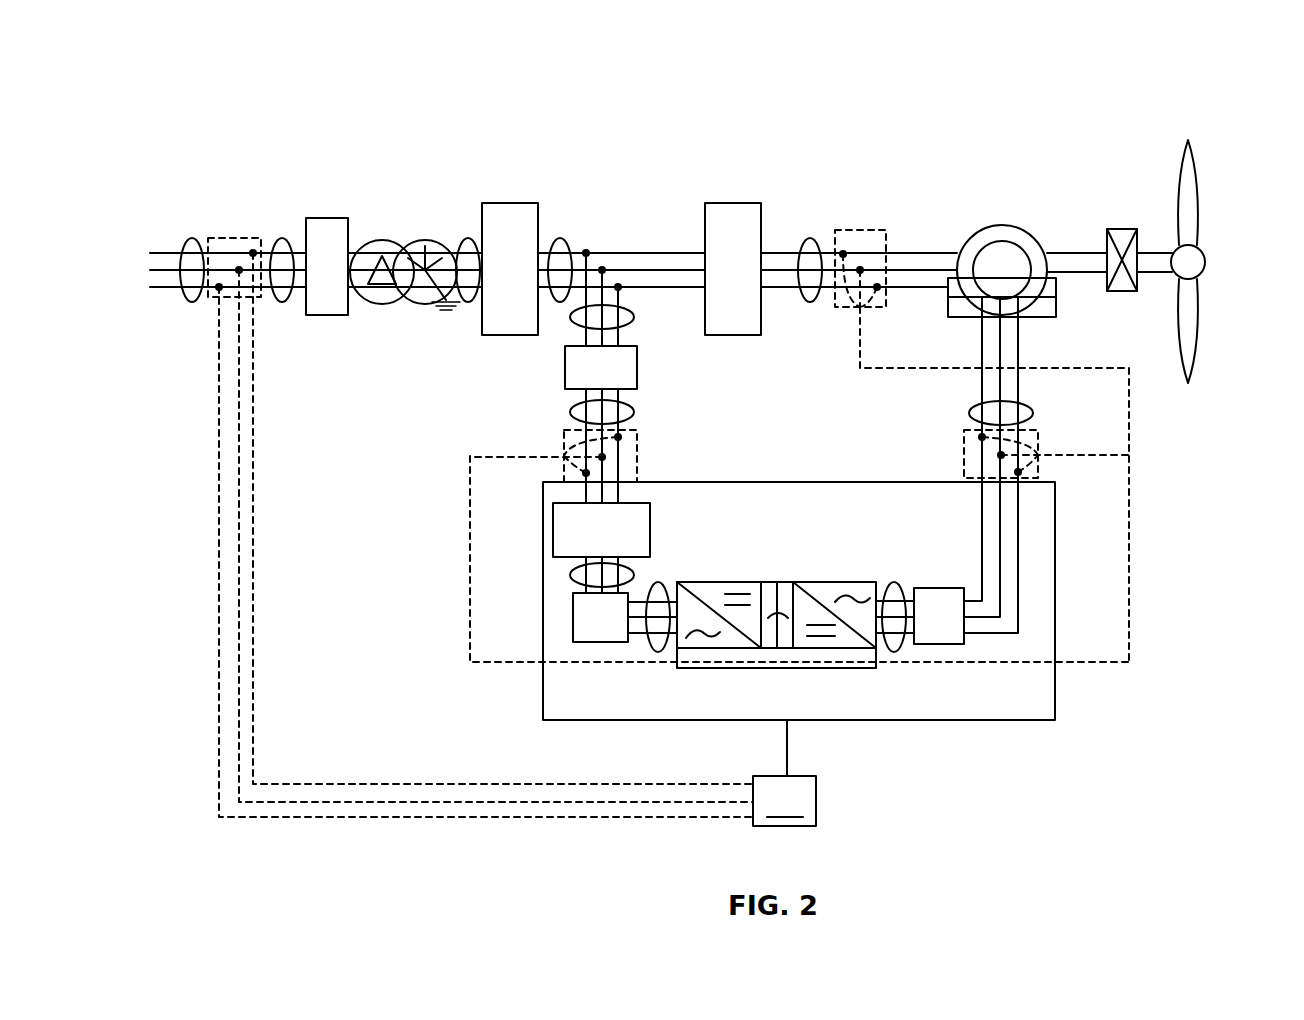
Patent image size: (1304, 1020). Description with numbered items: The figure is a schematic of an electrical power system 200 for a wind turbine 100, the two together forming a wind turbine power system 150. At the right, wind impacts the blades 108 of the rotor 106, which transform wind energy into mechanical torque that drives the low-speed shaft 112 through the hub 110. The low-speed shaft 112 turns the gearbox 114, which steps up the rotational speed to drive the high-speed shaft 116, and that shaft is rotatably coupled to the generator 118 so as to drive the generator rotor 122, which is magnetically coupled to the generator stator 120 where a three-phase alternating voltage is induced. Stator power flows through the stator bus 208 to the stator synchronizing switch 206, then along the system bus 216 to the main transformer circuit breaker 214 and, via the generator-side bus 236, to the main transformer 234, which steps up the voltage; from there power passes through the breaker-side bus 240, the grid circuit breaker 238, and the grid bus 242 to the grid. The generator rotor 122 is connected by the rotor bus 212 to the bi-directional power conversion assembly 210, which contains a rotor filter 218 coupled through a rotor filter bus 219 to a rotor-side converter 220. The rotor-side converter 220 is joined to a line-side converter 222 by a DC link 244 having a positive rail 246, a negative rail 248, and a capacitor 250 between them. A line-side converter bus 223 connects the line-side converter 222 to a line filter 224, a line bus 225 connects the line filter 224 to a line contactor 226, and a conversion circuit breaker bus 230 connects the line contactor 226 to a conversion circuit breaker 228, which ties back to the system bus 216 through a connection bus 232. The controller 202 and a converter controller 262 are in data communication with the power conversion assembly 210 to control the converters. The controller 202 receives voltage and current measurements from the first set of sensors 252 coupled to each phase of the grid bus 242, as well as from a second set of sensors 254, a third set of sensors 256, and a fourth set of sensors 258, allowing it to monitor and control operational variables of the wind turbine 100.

The wind turbine 100 is at (1175, 105).
The rotor 106 is at (1229, 261).
The blades 108 is at (1200, 195).
The hub 110 is at (1206, 262).
The low-speed shaft 112 is at (1152, 250).
The gearbox 114 is at (1120, 229).
The high-speed shaft 116 is at (1078, 250).
The generator 118 is at (1005, 168).
The generator stator 120 is at (1005, 226).
The generator rotor 122 is at (990, 245).
The wind turbine power system 150 is at (855, 63).
The electrical power system 200 is at (272, 101).
The controller 202 is at (784, 801).
The stator synchronizing switch 206 is at (733, 203).
The stator bus 208 is at (808, 238).
The power conversion assembly 210 is at (1055, 595).
The rotor bus 212 is at (1035, 413).
The main transformer circuit breaker 214 is at (514, 203).
The system bus 216 is at (561, 238).
The rotor filter 218 is at (938, 598).
The rotor filter bus 219 is at (895, 583).
The rotor-side converter 220 is at (876, 645).
The line-side converter 222 is at (676, 652).
The line-side converter bus 223 is at (657, 583).
The line filter 224 is at (573, 618).
The line bus 225 is at (570, 575).
The line contactor 226 is at (553, 530).
The conversion circuit breaker 228 is at (637, 368).
The conversion circuit breaker bus 230 is at (634, 412).
The connection bus 232 is at (634, 317).
The main transformer 234 is at (418, 240).
The generator-side bus 236 is at (467, 238).
The grid circuit breaker 238 is at (340, 218).
The breaker-side bus 240 is at (284, 238).
The grid bus 242 is at (196, 238).
The DC link 244 is at (763, 527).
The positive rail 246 is at (780, 582).
The negative rail 248 is at (785, 650).
The capacitor 250 is at (772, 610).
The first set of voltage and electric current sensors 252 is at (240, 238).
The second set of voltage and electric current sensors 254 is at (875, 208).
The third set of voltage and electric current sensors 256 is at (924, 457).
The fourth set of voltage and electric current sensors 258 is at (640, 455).
The converter controller 262 is at (835, 655).